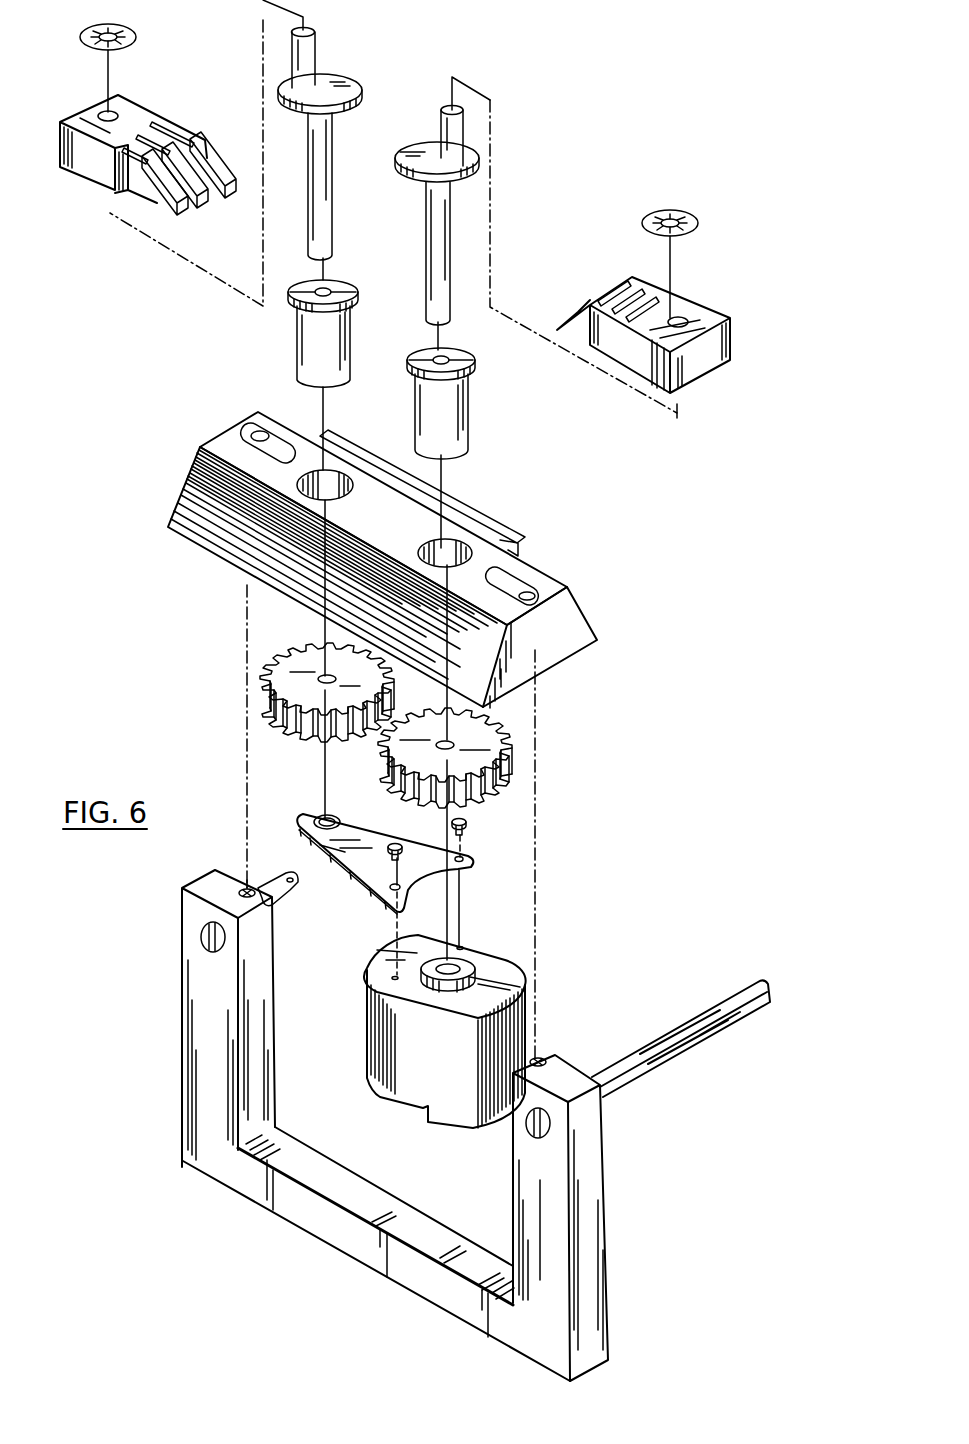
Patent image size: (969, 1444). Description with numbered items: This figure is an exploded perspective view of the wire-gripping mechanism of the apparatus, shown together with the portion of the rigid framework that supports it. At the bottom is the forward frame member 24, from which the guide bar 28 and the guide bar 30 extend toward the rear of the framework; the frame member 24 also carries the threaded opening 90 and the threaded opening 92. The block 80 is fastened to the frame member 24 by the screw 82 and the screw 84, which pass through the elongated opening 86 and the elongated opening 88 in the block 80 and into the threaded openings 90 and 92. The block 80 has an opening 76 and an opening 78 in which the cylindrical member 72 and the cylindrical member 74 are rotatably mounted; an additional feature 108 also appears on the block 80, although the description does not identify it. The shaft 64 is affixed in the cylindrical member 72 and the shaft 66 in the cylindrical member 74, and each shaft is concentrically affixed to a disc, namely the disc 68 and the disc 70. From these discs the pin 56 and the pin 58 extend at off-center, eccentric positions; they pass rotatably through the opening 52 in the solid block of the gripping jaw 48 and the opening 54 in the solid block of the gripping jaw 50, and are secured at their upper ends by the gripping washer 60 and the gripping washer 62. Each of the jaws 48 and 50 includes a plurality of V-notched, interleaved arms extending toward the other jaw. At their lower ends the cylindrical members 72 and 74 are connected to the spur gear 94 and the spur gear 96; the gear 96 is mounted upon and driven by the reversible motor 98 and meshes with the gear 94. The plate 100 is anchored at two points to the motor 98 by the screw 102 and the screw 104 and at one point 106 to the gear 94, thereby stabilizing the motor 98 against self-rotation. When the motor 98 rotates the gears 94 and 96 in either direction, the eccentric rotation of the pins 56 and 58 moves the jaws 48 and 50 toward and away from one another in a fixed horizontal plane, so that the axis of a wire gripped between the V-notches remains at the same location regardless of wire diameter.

The forward frame member 24 is at (598, 1212).
The guide bar 28 is at (692, 1042).
The guide bar 30 is at (280, 905).
The gripping jaw 48 is at (100, 170).
The gripping jaw 50 is at (706, 385).
The opening 52 is at (100, 115).
The opening 54 is at (685, 318).
The pin 56 is at (317, 40).
The pin 58 is at (443, 130).
The gripping washer 60 is at (134, 42).
The gripping washer 62 is at (682, 212).
The shaft 64 is at (334, 186).
The shaft 66 is at (426, 275).
The disc 68 is at (345, 78).
The disc 70 is at (412, 180).
The cylindrical member 72 is at (298, 346).
The cylindrical member 74 is at (468, 410).
The opening 76 is at (334, 485).
The opening 78 is at (452, 560).
The block 80 is at (389, 542).
The screw 82 is at (246, 436).
The screw 84 is at (543, 596).
The elongated opening 86 is at (265, 428).
The elongated opening 88 is at (515, 587).
The threaded opening 90 is at (244, 886).
The threaded opening 92 is at (545, 1058).
The spur gear 94 is at (262, 695).
The spur gear 96 is at (512, 748).
The reversible motor 98 is at (415, 1070).
The plate 100 is at (369, 851).
The screw 102 is at (398, 840).
The screw 104 is at (468, 820).
The anchor point 106 is at (313, 818).
The groove 108 is at (466, 512).